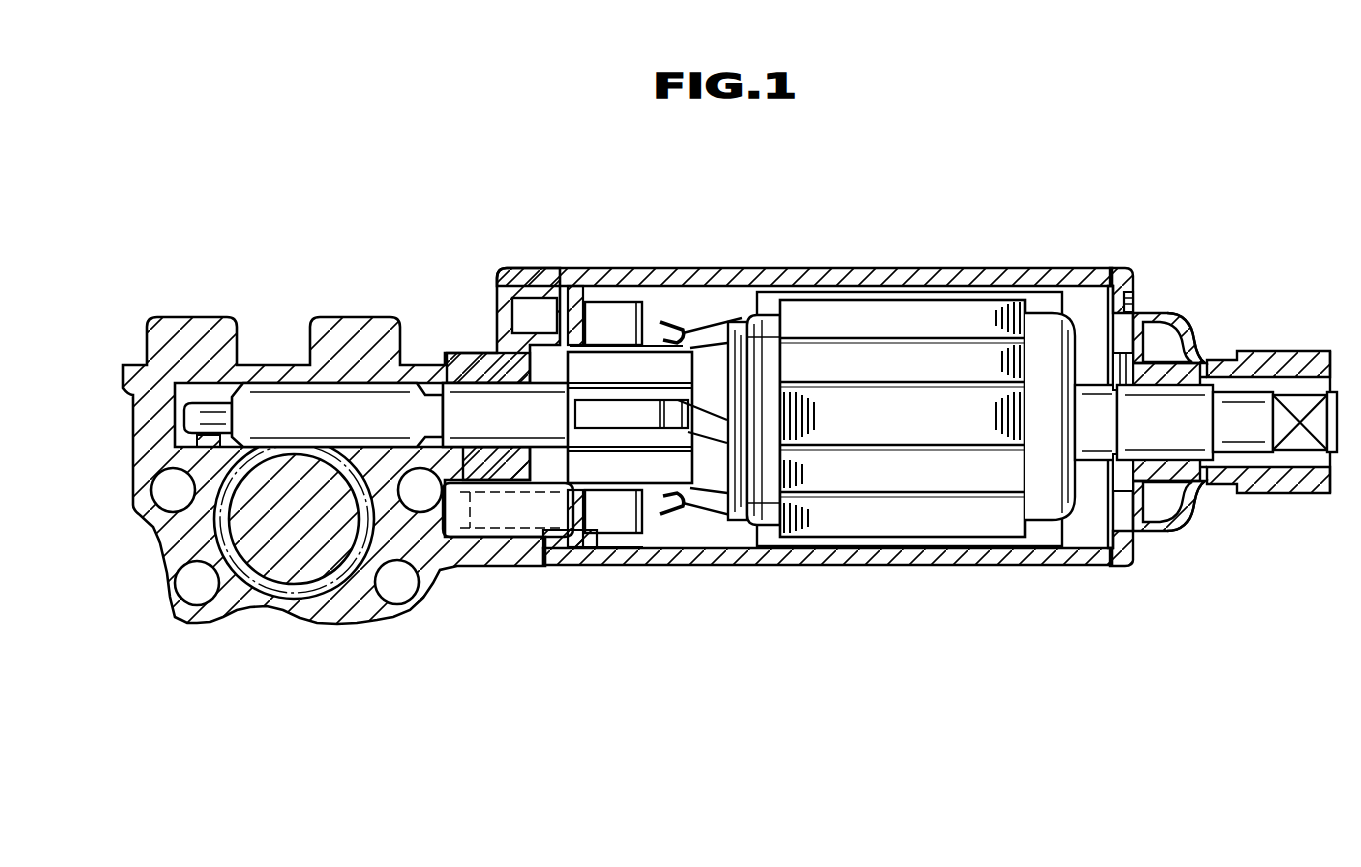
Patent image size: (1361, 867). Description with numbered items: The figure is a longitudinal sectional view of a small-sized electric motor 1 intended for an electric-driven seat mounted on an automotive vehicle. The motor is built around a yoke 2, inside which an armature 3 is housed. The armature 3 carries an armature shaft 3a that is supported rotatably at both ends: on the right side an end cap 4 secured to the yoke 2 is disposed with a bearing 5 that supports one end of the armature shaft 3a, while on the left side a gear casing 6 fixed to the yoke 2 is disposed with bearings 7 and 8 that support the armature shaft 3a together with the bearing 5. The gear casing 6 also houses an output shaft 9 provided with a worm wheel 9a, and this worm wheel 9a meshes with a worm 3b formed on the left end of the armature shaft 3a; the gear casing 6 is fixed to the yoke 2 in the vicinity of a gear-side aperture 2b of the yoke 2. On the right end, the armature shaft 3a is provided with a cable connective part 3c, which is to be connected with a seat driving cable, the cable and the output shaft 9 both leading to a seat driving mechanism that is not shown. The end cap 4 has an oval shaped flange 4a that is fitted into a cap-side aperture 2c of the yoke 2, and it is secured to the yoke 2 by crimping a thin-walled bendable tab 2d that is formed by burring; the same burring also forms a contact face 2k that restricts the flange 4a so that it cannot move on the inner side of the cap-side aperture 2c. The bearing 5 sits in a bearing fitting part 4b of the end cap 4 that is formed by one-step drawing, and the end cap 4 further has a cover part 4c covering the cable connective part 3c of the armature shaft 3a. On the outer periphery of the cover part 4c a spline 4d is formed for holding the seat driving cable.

The small-sized electric motor 1 is at (952, 218).
The yoke 2 is at (858, 280).
The gear-side aperture 2b is at (556, 565).
The cap-side aperture 2c is at (1090, 283).
The bendable tab 2d is at (1118, 283).
The contact face 2k is at (1133, 300).
The armature 3 is at (748, 350).
The armature shaft 3a is at (540, 410).
The worm 3b is at (275, 385).
The cable connective part 3c is at (1307, 402).
The end cap 4 is at (1182, 328).
The flange 4a is at (1136, 310).
The bearing fitting part 4b is at (1195, 484).
The cover part 4c is at (1275, 366).
The spline 4d is at (1303, 488).
The bearing 5 is at (1205, 362).
The gear casing 6 is at (505, 275).
The bearing 7 is at (203, 400).
The bearing 8 is at (472, 352).
The output shaft 9 is at (270, 543).
The worm wheel 9a is at (322, 596).